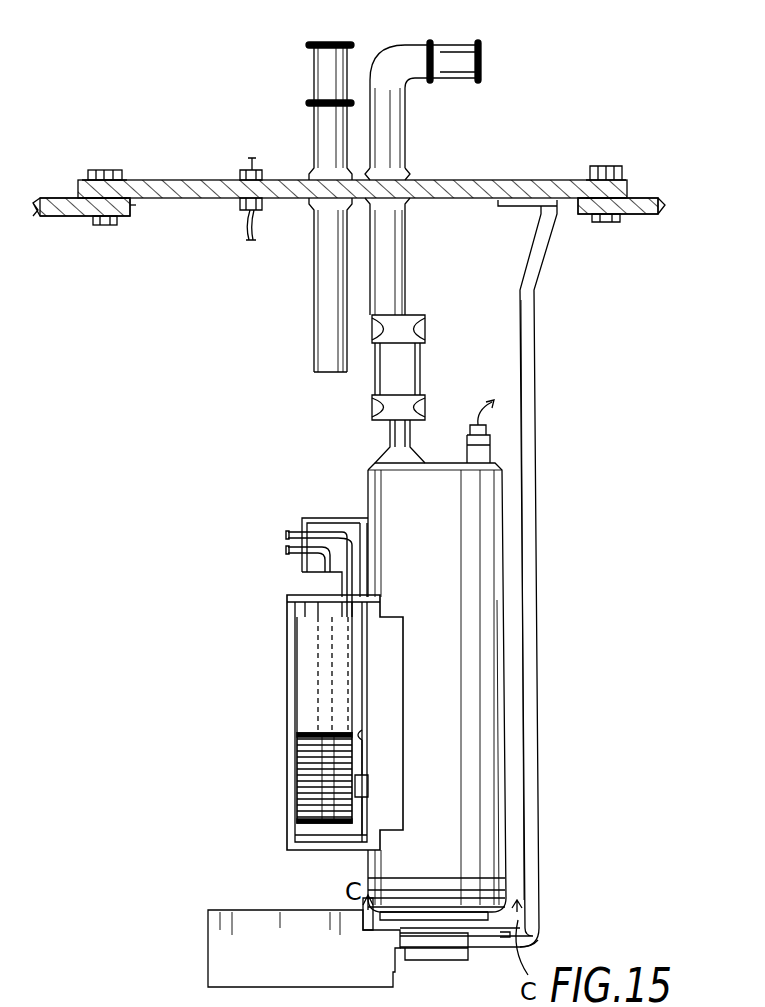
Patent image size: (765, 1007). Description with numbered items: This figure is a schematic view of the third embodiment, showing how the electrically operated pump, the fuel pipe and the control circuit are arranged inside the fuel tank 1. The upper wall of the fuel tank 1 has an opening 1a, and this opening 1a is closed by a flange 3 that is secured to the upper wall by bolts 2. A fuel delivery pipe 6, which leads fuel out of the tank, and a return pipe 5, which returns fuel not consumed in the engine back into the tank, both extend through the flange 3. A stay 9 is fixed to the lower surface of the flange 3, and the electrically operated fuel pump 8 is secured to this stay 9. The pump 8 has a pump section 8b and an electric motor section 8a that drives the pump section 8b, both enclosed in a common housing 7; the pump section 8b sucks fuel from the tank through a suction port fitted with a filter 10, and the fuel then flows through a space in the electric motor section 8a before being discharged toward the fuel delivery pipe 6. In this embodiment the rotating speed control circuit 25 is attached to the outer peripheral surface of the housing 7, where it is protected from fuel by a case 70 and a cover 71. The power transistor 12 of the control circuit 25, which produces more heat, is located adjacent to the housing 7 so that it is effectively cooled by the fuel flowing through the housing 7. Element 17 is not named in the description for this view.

The fuel tank 1 is at (52, 198).
The opening 1a is at (133, 214).
The bolts 2 is at (105, 170).
The flange 3 is at (162, 180).
The return pipe 5 is at (314, 68).
The fuel delivery pipe 6 is at (408, 45).
The housing 7 is at (506, 540).
The electrically operated fuel pump 8 is at (516, 617).
The electric motor section 8a is at (517, 702).
The pump section 8b is at (524, 903).
The stay 9 is at (540, 925).
The filter 10 is at (393, 972).
The power transistor 12 is at (366, 733).
The fuel pipes 17 is at (288, 550).
The rotating speed control circuit 25 is at (305, 725).
The case 70 is at (350, 850).
The cover 71 is at (290, 787).